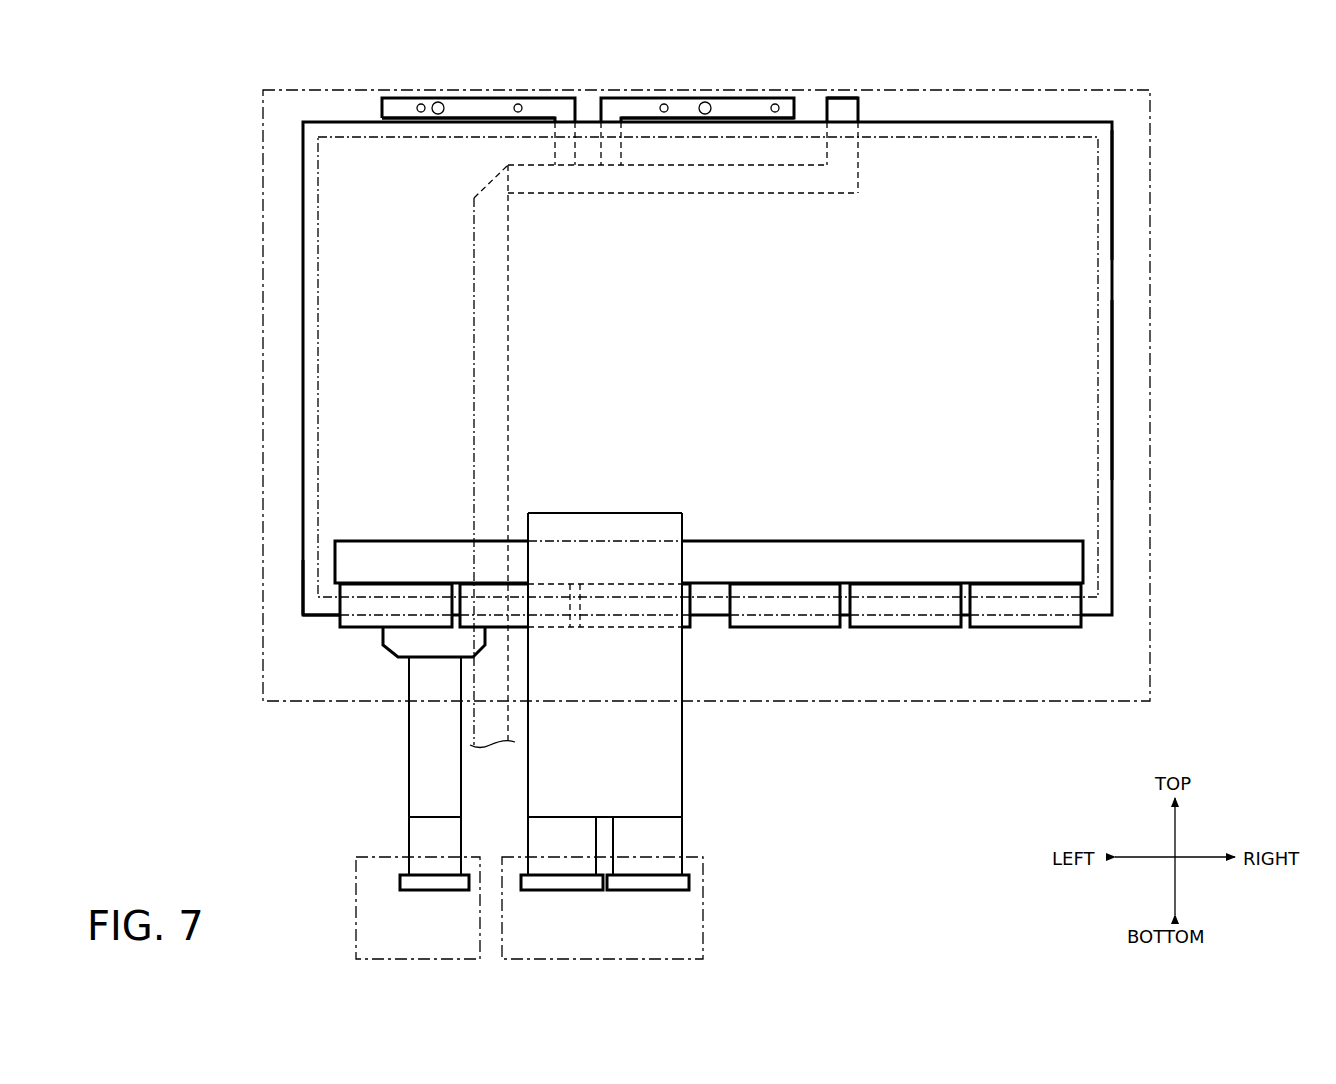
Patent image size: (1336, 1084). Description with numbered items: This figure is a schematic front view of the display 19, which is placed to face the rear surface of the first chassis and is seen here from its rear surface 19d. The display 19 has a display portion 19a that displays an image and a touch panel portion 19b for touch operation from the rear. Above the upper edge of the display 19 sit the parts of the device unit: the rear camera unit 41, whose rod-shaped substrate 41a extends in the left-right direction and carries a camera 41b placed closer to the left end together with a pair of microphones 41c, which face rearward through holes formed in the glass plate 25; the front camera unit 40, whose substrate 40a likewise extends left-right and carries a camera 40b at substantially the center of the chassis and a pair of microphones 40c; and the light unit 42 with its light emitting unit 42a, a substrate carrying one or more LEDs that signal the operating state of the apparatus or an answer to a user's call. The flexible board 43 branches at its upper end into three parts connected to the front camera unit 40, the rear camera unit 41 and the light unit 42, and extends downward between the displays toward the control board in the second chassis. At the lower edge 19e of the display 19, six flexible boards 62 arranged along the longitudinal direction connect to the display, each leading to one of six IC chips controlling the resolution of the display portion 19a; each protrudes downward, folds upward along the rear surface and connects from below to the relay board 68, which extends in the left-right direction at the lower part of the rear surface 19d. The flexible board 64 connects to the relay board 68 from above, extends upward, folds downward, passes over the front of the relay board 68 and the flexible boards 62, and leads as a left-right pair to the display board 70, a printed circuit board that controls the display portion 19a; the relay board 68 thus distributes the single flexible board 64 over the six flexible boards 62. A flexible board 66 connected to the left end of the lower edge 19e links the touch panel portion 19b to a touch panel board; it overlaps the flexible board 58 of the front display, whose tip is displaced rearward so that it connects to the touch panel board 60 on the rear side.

The display 19 is at (198, 101).
The display portion 19a is at (1065, 391).
The touch panel portion 19b is at (1097, 455).
The rear surface 19d is at (1065, 187).
The lower edge 19e is at (317, 617).
The glass plate 25 is at (1040, 88).
The front camera unit 40 is at (708, 148).
The substrate 40a is at (730, 108).
The camera 40b is at (705, 100).
The microphones 40c is at (663, 100).
The rear camera unit 41 is at (464, 127).
The substrate 41a is at (464, 107).
The camera 41b is at (447, 100).
The microphones 41c is at (421, 100).
The light unit 42 is at (893, 120).
The light emitting unit 42a is at (850, 112).
The flexible board 43 is at (512, 330).
The flexible board 58 is at (385, 758).
The touch panel board 60 is at (356, 905).
The flexible boards 62 is at (472, 628).
The flexible board 64 is at (670, 792).
The flexible board 66 is at (418, 797).
The relay board 68 is at (903, 558).
The display board 70 is at (703, 925).